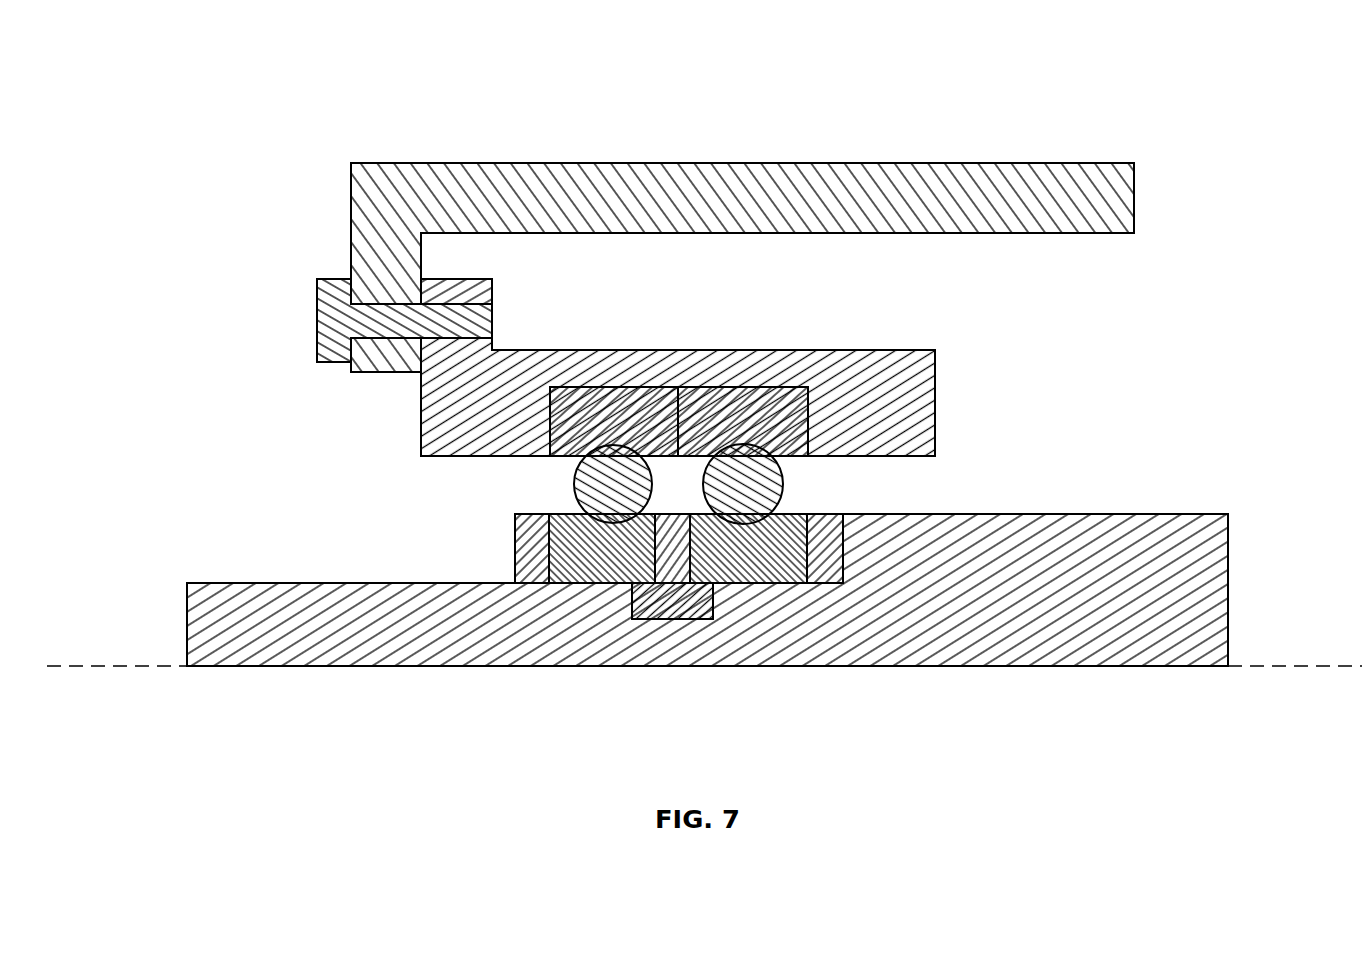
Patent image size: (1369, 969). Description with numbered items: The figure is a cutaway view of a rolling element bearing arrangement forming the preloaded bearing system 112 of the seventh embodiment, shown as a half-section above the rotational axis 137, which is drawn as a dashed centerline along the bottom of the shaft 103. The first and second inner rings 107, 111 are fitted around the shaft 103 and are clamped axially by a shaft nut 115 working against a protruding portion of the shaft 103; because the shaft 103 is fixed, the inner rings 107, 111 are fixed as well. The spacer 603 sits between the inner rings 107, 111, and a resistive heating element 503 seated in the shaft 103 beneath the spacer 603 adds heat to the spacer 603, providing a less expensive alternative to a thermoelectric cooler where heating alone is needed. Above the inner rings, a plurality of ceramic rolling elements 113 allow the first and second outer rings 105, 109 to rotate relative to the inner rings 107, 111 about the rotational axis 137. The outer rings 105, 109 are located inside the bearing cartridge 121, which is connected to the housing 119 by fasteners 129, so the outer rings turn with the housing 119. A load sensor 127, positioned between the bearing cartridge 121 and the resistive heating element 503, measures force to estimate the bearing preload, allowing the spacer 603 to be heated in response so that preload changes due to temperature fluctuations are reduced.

The preloaded bearing system 112 is at (225, 103).
The housing 119 is at (1123, 210).
The fasteners 129 is at (317, 345).
The bearing cartridge 121 is at (875, 362).
The second outer ring 109 is at (585, 400).
The first outer ring 105 is at (723, 395).
The rolling elements 113 is at (578, 495).
The spacer 603 is at (662, 537).
The shaft nut 115 is at (525, 568).
The second inner ring 111 is at (567, 540).
The first inner ring 107 is at (790, 565).
The load sensor 127 is at (832, 522).
The shaft 103 is at (1163, 530).
The resistive heating element 503 is at (680, 612).
The rotational axis 137 is at (112, 666).